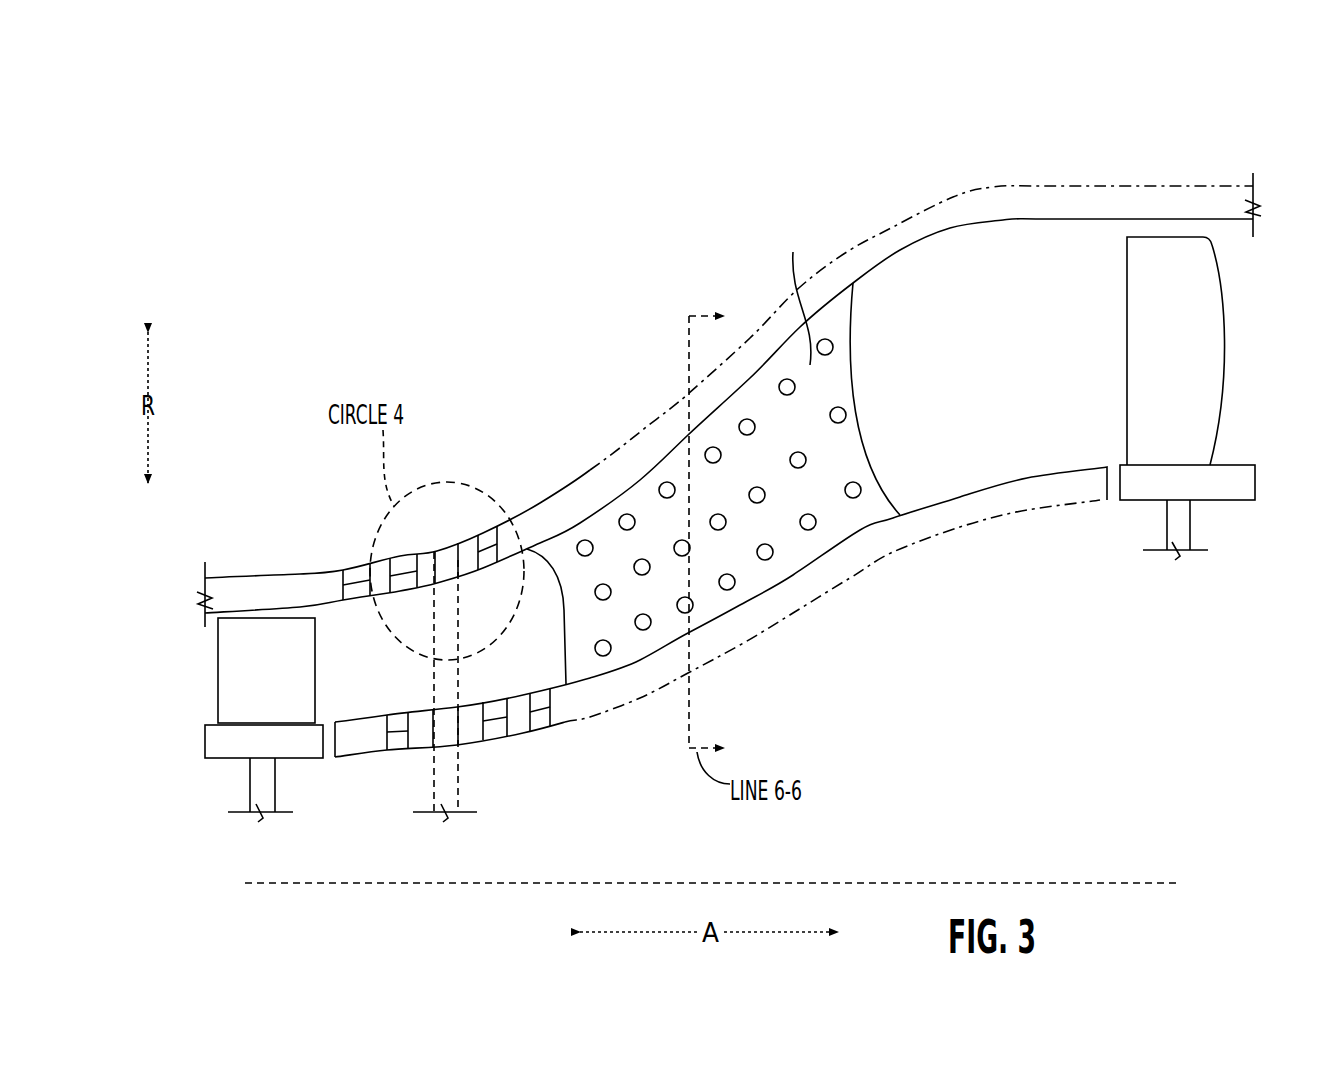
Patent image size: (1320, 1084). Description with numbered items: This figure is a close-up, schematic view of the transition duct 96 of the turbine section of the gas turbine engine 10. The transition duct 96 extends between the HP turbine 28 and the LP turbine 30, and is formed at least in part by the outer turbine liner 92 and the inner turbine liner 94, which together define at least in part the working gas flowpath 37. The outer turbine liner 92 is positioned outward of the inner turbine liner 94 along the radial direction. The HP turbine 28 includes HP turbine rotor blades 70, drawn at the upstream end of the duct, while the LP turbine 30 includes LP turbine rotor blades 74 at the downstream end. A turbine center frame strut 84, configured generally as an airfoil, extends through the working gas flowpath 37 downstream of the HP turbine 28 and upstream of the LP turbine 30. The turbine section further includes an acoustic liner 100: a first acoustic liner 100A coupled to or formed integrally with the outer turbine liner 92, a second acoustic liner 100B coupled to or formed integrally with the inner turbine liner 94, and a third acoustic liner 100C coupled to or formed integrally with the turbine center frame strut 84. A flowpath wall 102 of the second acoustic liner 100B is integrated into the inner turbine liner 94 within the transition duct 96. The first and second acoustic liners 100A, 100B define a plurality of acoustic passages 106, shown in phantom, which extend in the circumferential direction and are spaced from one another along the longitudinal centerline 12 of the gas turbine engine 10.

The gas turbine engine 10 is at (432, 260).
The longitudinal centerline 12 is at (318, 892).
The HP turbine 28 is at (240, 513).
The LP turbine 30 is at (1183, 146).
The working gas flowpath 37 is at (923, 399).
The HP turbine rotor blades 70 is at (258, 638).
The LP turbine rotor blades 74 is at (1187, 398).
The turbine center frame strut 84 is at (793, 294).
The outer turbine liner 92 is at (318, 588).
The inner turbine liner 94 is at (666, 668).
The transition duct 96 is at (729, 466).
The acoustic liner 100 is at (621, 535).
The first acoustic liner 100A is at (468, 497).
The second acoustic liner 100B is at (523, 743).
The third acoustic liner 100C is at (680, 473).
The flowpath wall 102 is at (393, 598).
The acoustic passages 106 is at (444, 558).